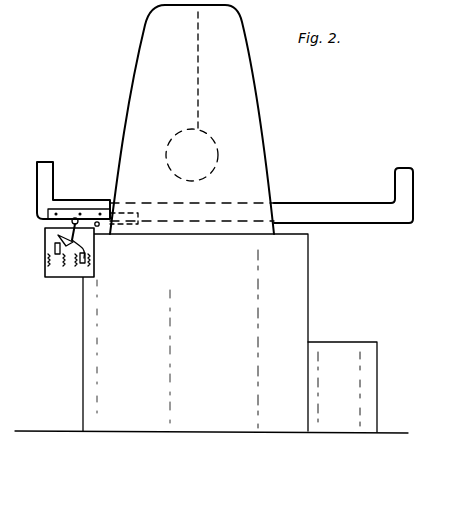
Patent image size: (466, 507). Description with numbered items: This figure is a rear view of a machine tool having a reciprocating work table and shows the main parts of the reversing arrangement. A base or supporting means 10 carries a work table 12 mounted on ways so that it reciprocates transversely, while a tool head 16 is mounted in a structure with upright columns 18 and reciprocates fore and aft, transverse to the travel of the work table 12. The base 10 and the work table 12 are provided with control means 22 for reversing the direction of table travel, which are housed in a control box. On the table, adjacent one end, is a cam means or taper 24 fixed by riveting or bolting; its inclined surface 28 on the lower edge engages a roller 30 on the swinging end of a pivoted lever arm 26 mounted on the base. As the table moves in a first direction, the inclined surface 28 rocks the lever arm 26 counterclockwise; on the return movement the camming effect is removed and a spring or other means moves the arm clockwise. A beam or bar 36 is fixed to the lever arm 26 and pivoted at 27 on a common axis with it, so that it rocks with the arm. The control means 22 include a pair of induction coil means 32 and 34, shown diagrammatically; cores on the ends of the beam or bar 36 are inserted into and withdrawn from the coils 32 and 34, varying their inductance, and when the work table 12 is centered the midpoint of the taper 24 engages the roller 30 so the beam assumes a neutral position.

The base 10 is at (205, 425).
The work table 12 is at (340, 203).
The tool head 16 is at (193, 132).
The upright columns 18 is at (253, 110).
The control means 22 is at (68, 283).
The cam means or taper 24 is at (65, 209).
The lever arm 26 is at (57, 234).
The pivot 27 is at (82, 246).
The inclined surface 28 is at (97, 218).
The roller 30 is at (62, 220).
The induction coil means 32 is at (50, 258).
The induction coil means 34 is at (92, 268).
The beam or bar 36 is at (78, 240).